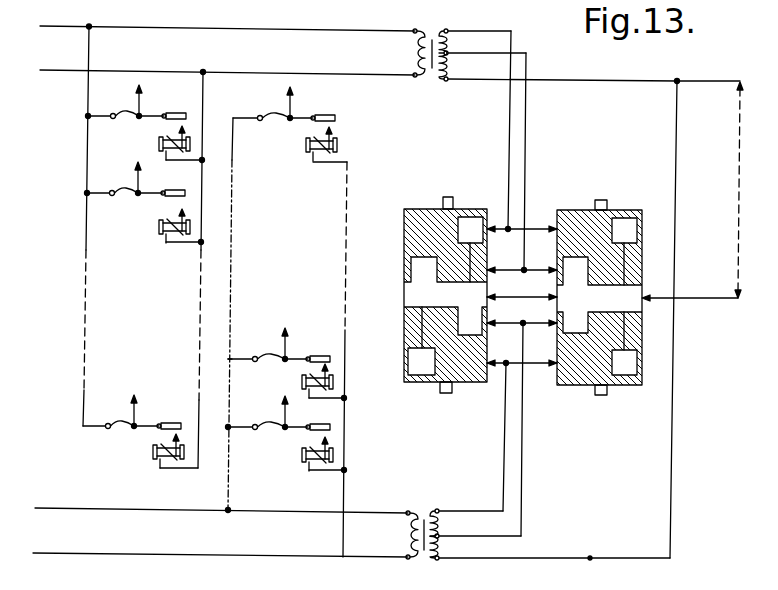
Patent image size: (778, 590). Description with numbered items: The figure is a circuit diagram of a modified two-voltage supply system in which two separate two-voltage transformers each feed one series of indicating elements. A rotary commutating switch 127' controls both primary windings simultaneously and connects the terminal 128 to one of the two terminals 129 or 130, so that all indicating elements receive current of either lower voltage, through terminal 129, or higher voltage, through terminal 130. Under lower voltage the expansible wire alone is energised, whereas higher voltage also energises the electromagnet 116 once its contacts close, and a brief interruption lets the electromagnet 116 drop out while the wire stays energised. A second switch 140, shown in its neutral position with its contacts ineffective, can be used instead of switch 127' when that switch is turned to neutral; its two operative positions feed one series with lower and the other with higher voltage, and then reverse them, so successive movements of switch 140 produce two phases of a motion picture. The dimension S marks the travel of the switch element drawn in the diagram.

The electromagnet 116 is at (307, 146).
The switch 127' is at (599, 284).
The terminal 128 is at (690, 300).
The terminal 129 is at (533, 227).
The terminal 130 is at (524, 271).
The switch 140 is at (422, 207).
The stroke S is at (738, 190).